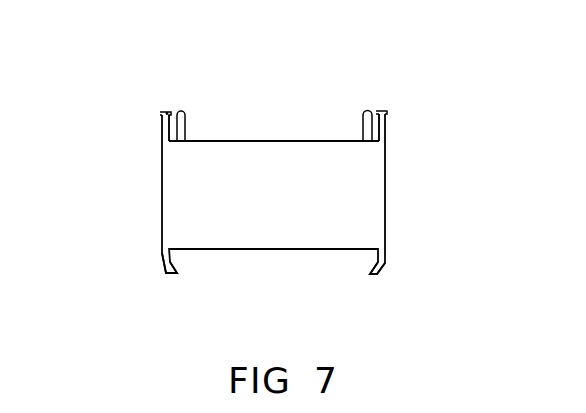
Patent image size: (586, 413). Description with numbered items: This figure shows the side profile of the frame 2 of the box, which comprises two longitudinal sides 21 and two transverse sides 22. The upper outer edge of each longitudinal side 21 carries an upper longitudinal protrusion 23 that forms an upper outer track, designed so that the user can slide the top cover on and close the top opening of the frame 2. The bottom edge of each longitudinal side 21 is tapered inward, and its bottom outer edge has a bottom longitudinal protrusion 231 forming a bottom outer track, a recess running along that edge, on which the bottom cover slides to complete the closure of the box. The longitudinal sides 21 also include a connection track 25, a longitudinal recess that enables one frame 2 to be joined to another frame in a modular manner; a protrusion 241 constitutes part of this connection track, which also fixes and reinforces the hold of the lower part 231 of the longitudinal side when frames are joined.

The frame 2 is at (423, 170).
The longitudinal side 21 is at (386, 137).
The transverse side 22 is at (195, 230).
The upper longitudinal protrusion 23 is at (165, 113).
The bottom longitudinal protrusion 231 is at (167, 274).
The protrusion 241 is at (174, 125).
The connection track 25 is at (174, 112).